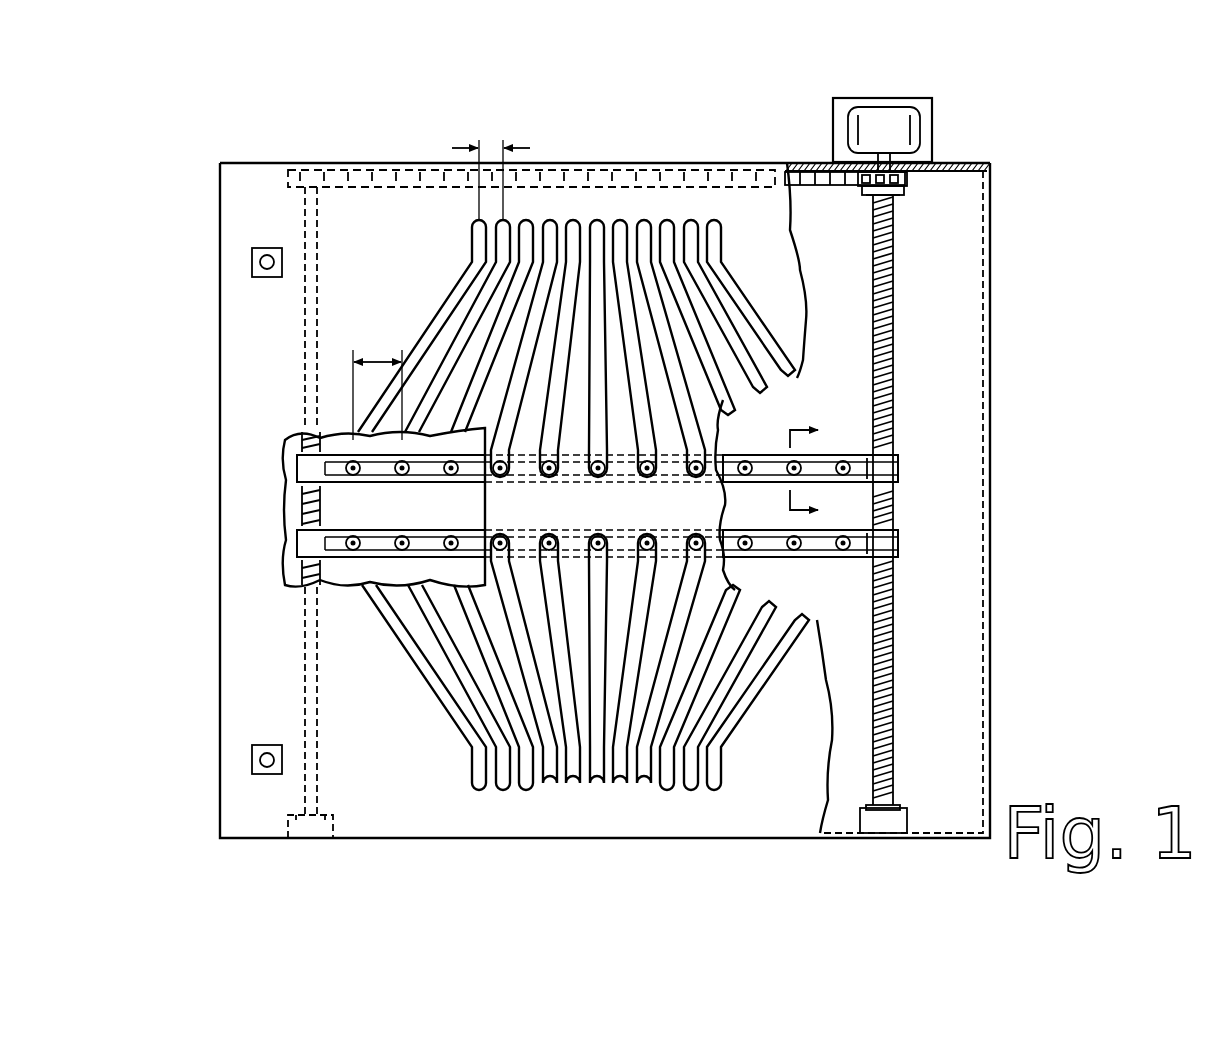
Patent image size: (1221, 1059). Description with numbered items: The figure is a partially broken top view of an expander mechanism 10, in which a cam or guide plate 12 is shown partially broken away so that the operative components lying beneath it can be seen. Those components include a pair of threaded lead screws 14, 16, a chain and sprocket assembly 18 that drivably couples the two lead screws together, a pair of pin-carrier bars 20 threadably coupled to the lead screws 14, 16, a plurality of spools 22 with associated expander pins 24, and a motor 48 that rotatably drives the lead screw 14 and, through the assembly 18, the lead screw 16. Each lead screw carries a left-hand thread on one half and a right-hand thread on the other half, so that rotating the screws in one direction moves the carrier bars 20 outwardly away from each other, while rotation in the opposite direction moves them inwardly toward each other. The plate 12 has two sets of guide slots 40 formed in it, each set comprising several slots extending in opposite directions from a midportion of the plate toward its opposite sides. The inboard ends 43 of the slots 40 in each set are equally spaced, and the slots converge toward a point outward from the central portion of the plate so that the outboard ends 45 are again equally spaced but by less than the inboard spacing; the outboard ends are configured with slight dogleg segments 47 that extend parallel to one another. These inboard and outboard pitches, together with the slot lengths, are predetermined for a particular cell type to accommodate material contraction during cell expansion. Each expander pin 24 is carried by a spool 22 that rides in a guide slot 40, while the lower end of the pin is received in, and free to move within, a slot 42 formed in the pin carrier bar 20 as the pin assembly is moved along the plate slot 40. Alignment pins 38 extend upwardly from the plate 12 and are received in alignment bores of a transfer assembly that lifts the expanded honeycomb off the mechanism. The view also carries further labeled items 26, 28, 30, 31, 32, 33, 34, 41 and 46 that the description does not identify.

The expander mechanism 10 is at (268, 100).
The cam or guide plate 12 is at (230, 197).
The threaded lead screw 14 is at (897, 292).
The threaded lead screw 16 is at (303, 330).
The chain and sprocket assembly 18 is at (910, 174).
The pin-carrier bars 20 is at (868, 467).
The spools 22 is at (375, 463).
The expander pins 24 is at (300, 567).
The threaded portion 26 is at (895, 430).
The lower screw portion 28 is at (890, 750).
The adjustment knob 30 is at (860, 162).
The lower bearing block 31 is at (895, 838).
The top rail 32 is at (340, 170).
The lower guide block 33 is at (308, 838).
The top edge of housing 34 is at (575, 164).
The alignment pins 38 is at (252, 262).
The guide slots 40 is at (745, 368).
The lower fin legs 41 is at (430, 682).
The slot 42 is at (895, 470).
The inboard ends 43 is at (635, 528).
The outboard ends 45 is at (646, 222).
The housing side wall 46 is at (988, 690).
The dogleg segments 47 is at (475, 240).
The motor 48 is at (884, 130).